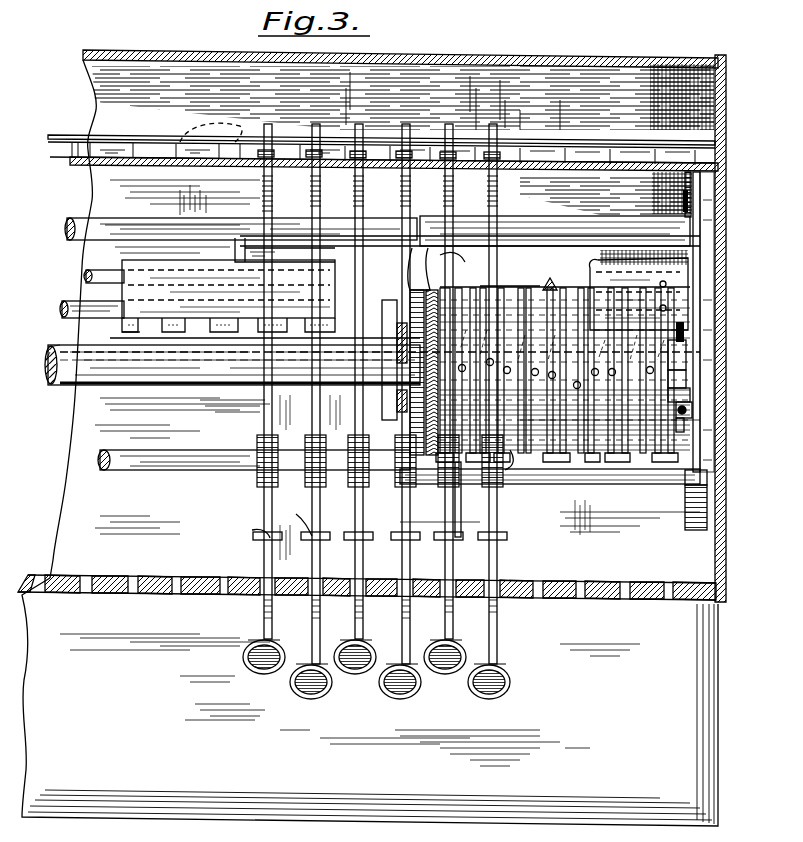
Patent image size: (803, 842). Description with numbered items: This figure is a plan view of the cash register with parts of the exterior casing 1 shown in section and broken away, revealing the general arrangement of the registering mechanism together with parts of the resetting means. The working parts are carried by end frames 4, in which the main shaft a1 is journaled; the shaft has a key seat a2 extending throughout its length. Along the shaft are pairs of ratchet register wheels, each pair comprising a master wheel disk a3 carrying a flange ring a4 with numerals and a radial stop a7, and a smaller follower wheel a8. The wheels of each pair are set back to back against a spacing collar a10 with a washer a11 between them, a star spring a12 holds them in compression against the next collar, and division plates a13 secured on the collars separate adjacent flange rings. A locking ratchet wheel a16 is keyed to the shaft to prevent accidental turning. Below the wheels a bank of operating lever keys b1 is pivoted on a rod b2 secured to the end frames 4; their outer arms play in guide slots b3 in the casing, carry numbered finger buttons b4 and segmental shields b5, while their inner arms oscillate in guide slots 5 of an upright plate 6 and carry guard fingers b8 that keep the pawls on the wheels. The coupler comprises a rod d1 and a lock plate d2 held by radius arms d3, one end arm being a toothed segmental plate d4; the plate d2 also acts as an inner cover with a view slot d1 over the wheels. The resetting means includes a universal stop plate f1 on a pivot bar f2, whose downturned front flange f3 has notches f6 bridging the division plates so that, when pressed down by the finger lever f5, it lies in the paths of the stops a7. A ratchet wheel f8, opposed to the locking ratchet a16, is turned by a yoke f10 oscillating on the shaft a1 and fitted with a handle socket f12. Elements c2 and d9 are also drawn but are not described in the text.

The exterior casing 1 is at (107, 57).
The end frames 4 is at (708, 236).
The guide slots 5 is at (211, 124).
The upright plate 6 is at (155, 142).
The pawls c2 is at (268, 148).
The guard finger b8 is at (270, 183).
The lock plate d2 is at (288, 226).
The radius arms d3 is at (238, 258).
The washer a11 is at (405, 265).
The flange ring a4 is at (458, 265).
The stop block d9 is at (697, 203).
The segmental plate d4 is at (690, 218).
The pivot bar f2 is at (773, 234).
The front flange f3 is at (130, 320).
The universal stop plate f1 is at (122, 270).
The coupler rod d1 is at (96, 328).
The main shaft a1 is at (98, 386).
The key seat a2 is at (58, 343).
The notches f6 is at (151, 330).
The finger lever f5 is at (686, 332).
The ratchet wheel f8 is at (688, 362).
The yoke f10 is at (688, 380).
The radial stop a7 is at (692, 396).
The locking ratchet wheel a16 is at (693, 408).
The handle socket f12 is at (690, 420).
The follower wheel a8 is at (378, 495).
The master wheel disk a3 is at (432, 460).
The spacing collar a10 is at (410, 410).
The star spring a12 is at (430, 432).
The division plates a13 is at (500, 475).
The rod b2 is at (206, 450).
The segmental shields b5 is at (252, 528).
The operating lever keys b1 is at (277, 545).
The guide slots b3 is at (120, 574).
The finger buttons b4 is at (245, 668).